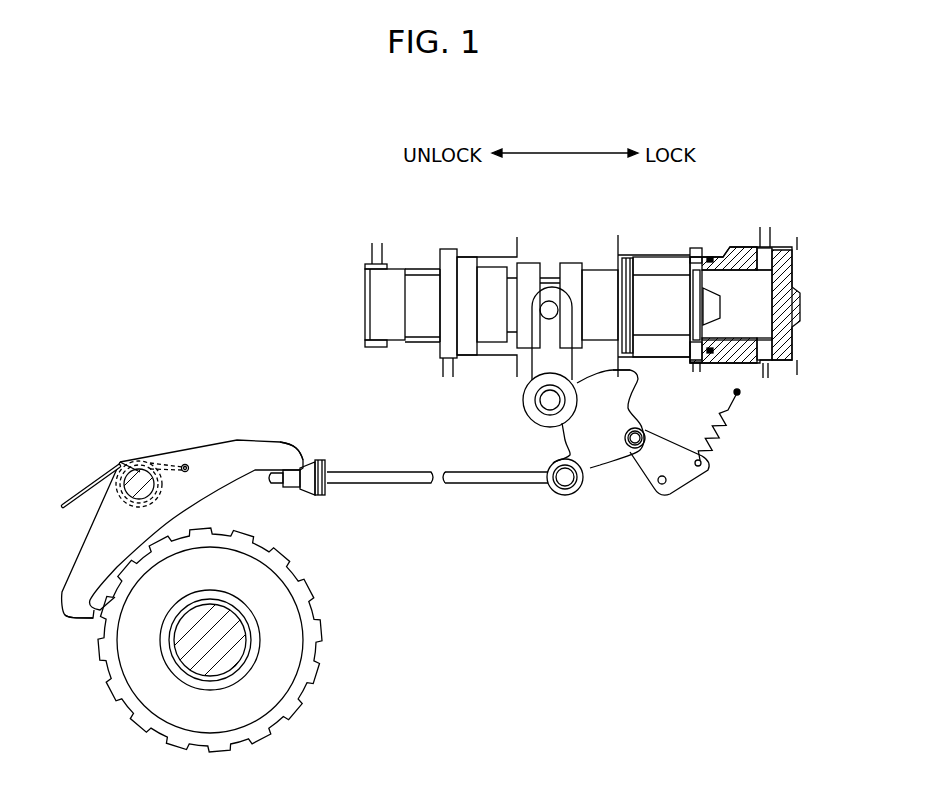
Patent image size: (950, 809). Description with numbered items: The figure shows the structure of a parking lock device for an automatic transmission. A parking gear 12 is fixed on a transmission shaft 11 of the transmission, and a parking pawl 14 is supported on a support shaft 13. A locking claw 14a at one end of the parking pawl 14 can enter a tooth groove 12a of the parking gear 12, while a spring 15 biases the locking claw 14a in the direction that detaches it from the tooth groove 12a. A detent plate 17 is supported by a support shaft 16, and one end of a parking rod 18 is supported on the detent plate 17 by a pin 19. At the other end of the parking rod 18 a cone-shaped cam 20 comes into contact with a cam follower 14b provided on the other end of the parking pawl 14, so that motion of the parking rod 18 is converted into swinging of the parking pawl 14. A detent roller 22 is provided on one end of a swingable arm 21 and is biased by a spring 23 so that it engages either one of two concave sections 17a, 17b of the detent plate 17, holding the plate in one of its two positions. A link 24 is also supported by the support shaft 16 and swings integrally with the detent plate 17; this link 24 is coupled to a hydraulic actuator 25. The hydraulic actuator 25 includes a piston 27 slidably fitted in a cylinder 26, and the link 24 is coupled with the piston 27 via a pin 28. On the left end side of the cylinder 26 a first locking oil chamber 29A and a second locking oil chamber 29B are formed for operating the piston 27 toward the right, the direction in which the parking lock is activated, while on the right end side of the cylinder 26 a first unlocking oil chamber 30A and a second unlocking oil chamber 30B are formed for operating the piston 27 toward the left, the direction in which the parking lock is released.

The transmission shaft 11 is at (232, 630).
The parking gear 12 is at (320, 617).
The tooth groove 12a is at (311, 597).
The support shaft 13 is at (138, 480).
The parking pawl 14 is at (215, 442).
The locking claw 14a is at (93, 612).
The cam follower 14b is at (300, 458).
The spring 15 is at (78, 500).
The support shaft 16 is at (545, 400).
The detent plate 17 is at (600, 469).
The concave section 17a is at (627, 440).
The concave section 17b is at (640, 397).
The parking rod 18 is at (398, 473).
The pin 19 is at (562, 483).
The cone-shaped cam 20 is at (315, 493).
The swingable arm 21 is at (645, 465).
The detent roller 22 is at (647, 437).
The spring 23 is at (728, 425).
The link 24 is at (557, 355).
The hydraulic actuator 25 is at (713, 213).
The cylinder 26 is at (487, 258).
The piston 27 is at (600, 287).
The pin 28 is at (549, 302).
The first locking oil chamber 29A is at (443, 260).
The second locking oil chamber 29B is at (365, 268).
The first unlocking oil chamber 30A is at (737, 285).
The second unlocking oil chamber 30B is at (668, 258).